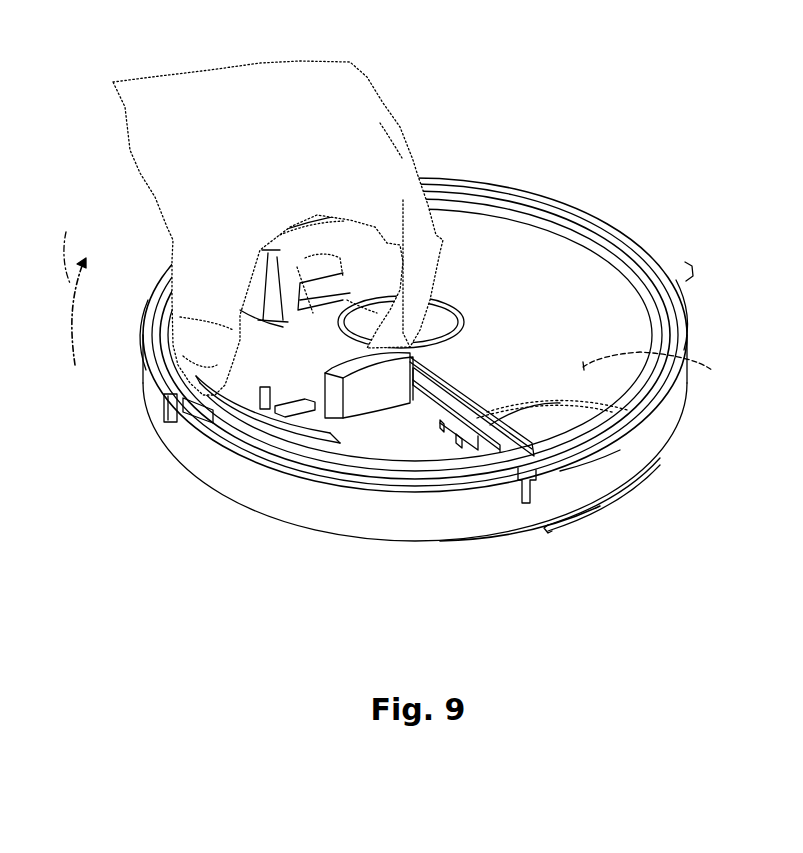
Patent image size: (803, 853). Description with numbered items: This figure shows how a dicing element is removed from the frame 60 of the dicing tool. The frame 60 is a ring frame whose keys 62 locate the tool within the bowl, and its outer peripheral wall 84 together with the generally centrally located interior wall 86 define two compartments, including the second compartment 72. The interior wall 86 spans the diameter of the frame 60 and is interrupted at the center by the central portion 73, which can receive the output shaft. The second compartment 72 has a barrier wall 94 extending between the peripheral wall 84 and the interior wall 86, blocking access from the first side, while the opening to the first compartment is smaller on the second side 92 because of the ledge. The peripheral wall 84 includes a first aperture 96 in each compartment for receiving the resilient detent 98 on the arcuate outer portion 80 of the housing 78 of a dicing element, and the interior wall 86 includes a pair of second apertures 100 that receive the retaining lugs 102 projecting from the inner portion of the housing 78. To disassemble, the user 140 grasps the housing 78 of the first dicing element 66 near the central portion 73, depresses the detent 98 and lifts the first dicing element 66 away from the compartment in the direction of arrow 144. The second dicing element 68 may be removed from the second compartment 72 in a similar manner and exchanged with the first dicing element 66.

The frame 60 is at (138, 358).
The keys 62 is at (166, 412).
The first dicing element 66 is at (185, 258).
The second dicing element 68 is at (583, 520).
The second compartment 72 is at (660, 366).
The central portion 73 is at (457, 333).
The housing 78 is at (462, 440).
The outer portion 80 is at (273, 440).
The peripheral wall 84 is at (290, 502).
The interior wall 86 is at (482, 455).
The second side 92 is at (517, 530).
The barrier wall 94 is at (553, 268).
The first aperture 96 is at (192, 414).
The resilient detent 98 is at (203, 410).
The second apertures 100 is at (560, 403).
The retaining lugs 102 is at (583, 440).
The user 140 is at (371, 80).
The arrow 144 is at (68, 287).